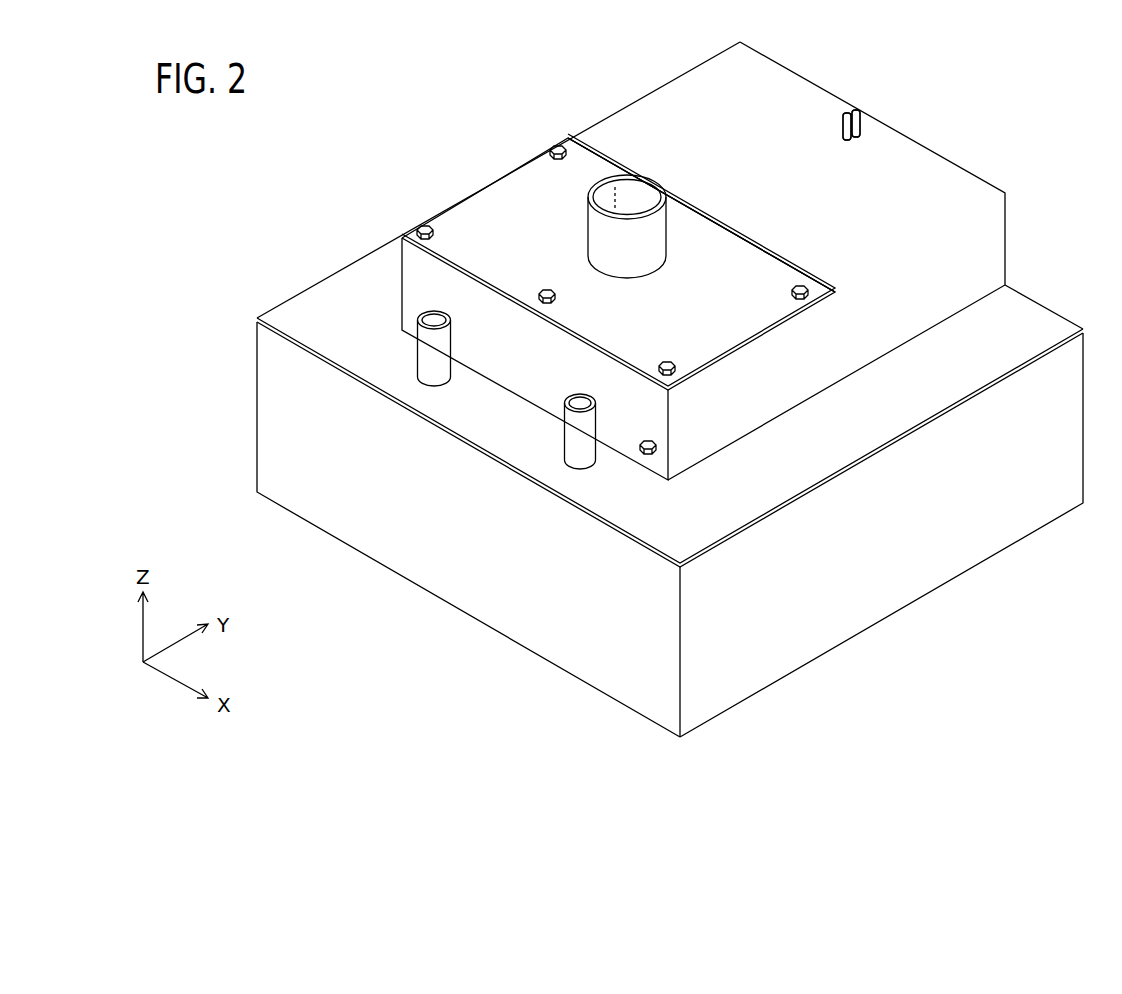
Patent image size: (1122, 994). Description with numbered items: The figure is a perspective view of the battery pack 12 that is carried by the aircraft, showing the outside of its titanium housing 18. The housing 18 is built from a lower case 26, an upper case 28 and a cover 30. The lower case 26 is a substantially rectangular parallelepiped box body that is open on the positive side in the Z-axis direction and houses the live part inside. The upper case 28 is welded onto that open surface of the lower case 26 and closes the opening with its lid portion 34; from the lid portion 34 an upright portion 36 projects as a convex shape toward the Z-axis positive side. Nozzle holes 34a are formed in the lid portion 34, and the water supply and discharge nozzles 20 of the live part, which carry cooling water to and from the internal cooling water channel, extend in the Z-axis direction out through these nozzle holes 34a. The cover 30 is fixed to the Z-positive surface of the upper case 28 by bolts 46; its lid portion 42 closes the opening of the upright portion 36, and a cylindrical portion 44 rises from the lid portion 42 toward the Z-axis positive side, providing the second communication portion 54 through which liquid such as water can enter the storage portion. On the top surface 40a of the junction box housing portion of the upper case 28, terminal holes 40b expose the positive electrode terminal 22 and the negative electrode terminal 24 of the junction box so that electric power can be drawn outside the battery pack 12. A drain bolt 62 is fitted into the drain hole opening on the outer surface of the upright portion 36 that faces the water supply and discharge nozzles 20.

The battery pack 12 is at (1058, 56).
The housing 18 is at (1050, 291).
The water supply and discharge nozzles 20 is at (451, 344).
The positive electrode terminal 22 is at (861, 123).
The negative electrode terminal 24 is at (842, 125).
The lower case 26 is at (274, 424).
The upper case 28 is at (310, 300).
The cover 30 is at (477, 203).
The lid portion 34 is at (355, 277).
The nozzle holes 34a is at (441, 388).
The upright portion 36 is at (412, 292).
The top surface 40a is at (940, 178).
The terminal holes 40b is at (857, 138).
The lid portion 42 is at (505, 193).
The cylindrical portion 44 is at (648, 262).
The bolts 46 is at (552, 149).
The second communication portion 54 is at (636, 190).
The drain bolt 62 is at (656, 444).